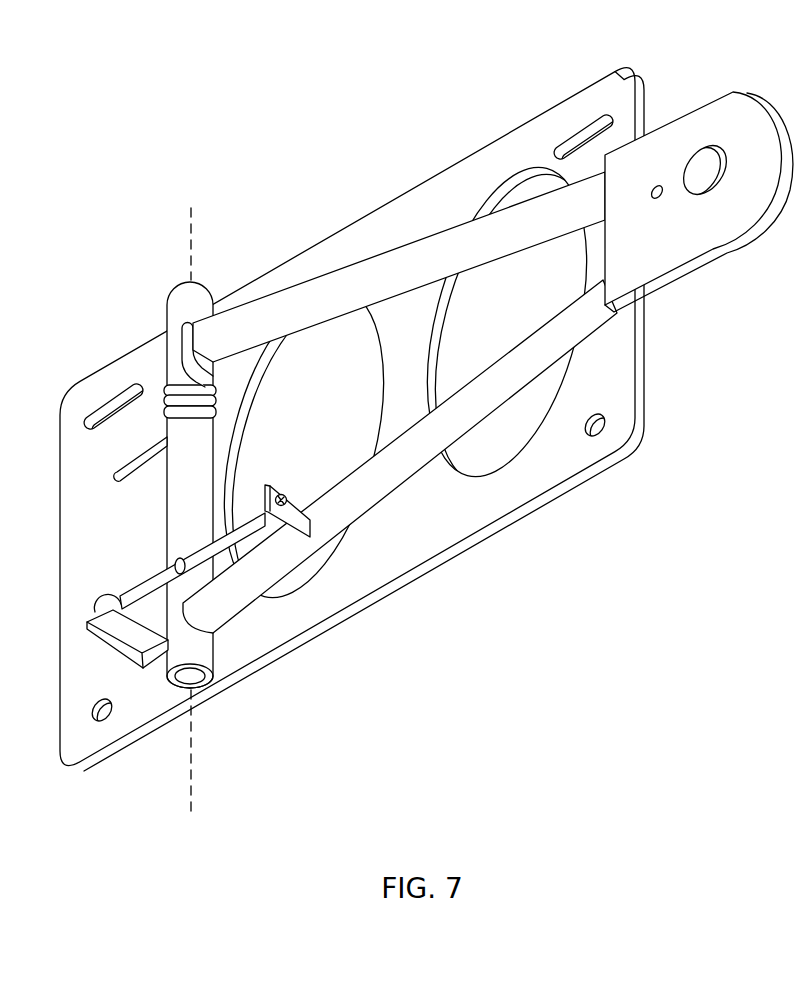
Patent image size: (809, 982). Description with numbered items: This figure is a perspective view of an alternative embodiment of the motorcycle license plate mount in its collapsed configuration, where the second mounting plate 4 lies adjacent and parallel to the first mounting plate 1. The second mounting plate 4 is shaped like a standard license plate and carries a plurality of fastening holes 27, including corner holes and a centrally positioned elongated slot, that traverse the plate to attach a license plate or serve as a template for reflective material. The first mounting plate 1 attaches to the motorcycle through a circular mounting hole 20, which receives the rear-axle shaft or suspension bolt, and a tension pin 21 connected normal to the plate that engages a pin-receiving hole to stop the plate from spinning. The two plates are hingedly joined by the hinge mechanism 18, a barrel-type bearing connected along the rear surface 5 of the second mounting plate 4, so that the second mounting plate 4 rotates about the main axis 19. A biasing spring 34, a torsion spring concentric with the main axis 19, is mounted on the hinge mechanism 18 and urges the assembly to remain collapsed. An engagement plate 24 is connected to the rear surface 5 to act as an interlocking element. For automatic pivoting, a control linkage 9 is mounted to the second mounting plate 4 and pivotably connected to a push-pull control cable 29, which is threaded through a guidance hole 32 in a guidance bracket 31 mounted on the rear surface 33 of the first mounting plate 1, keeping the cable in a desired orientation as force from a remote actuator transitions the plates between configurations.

The first mounting plate 1 is at (465, 250).
The second mounting plate 4 is at (375, 419).
The rear surface 5 is at (624, 347).
The control linkage 9 is at (143, 583).
The hinge mechanism 18 is at (205, 648).
The main axis 19 is at (196, 791).
The mounting hole 20 is at (700, 172).
The tension pin 21 is at (654, 196).
The engagement plate 24 is at (130, 638).
The plurality of fastening holes 27 is at (104, 418).
The push-pull control cable 29 is at (236, 522).
The guidance bracket 31 is at (302, 518).
The guidance hole 32 is at (285, 495).
The rear surface 33 is at (699, 163).
The biasing spring 34 is at (118, 474).